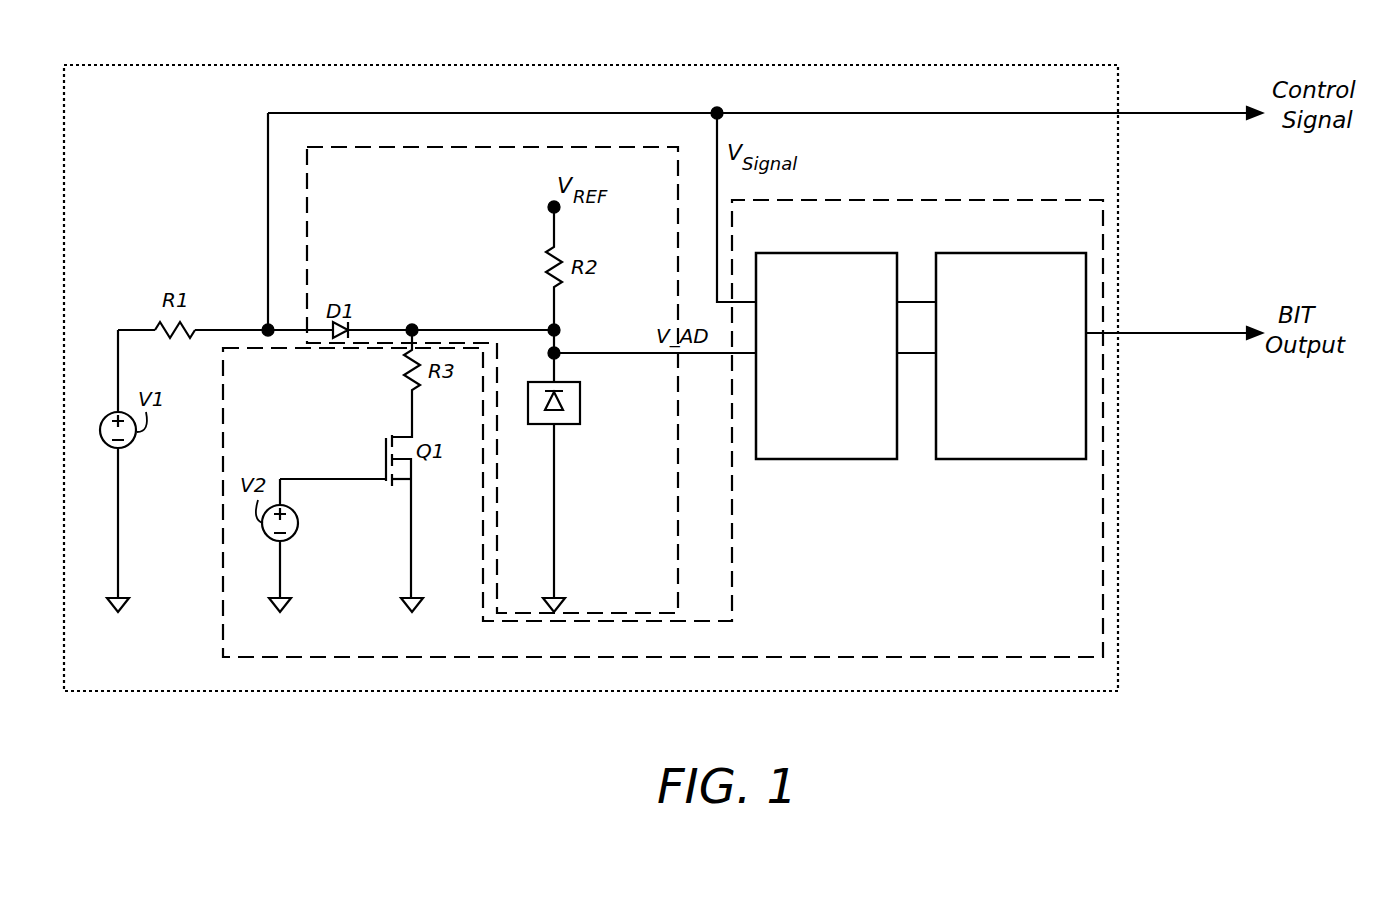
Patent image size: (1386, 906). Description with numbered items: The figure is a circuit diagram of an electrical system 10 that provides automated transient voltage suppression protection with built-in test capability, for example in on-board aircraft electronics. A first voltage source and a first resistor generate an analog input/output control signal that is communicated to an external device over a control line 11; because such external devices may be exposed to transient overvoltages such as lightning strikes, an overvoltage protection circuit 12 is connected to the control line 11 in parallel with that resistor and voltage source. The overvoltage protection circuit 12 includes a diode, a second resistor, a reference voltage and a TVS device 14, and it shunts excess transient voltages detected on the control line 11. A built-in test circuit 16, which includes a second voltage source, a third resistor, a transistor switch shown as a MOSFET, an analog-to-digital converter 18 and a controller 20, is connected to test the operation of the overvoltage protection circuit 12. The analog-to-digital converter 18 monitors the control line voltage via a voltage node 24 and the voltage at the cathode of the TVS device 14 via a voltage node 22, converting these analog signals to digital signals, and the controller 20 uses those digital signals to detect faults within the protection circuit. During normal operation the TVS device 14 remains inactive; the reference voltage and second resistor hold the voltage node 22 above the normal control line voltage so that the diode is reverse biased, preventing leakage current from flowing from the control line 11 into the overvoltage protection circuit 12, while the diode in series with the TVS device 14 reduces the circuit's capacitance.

The electrical system 10 is at (563, 66).
The control line 11 is at (1130, 113).
The overvoltage protection circuit 12 is at (590, 146).
The TVS device 14 is at (580, 401).
The built-in test circuit 16 is at (221, 657).
The analog-to-digital converter 18 is at (797, 253).
The controller 20 is at (985, 253).
The voltage node 22 is at (560, 328).
The voltage node 24 is at (717, 112).